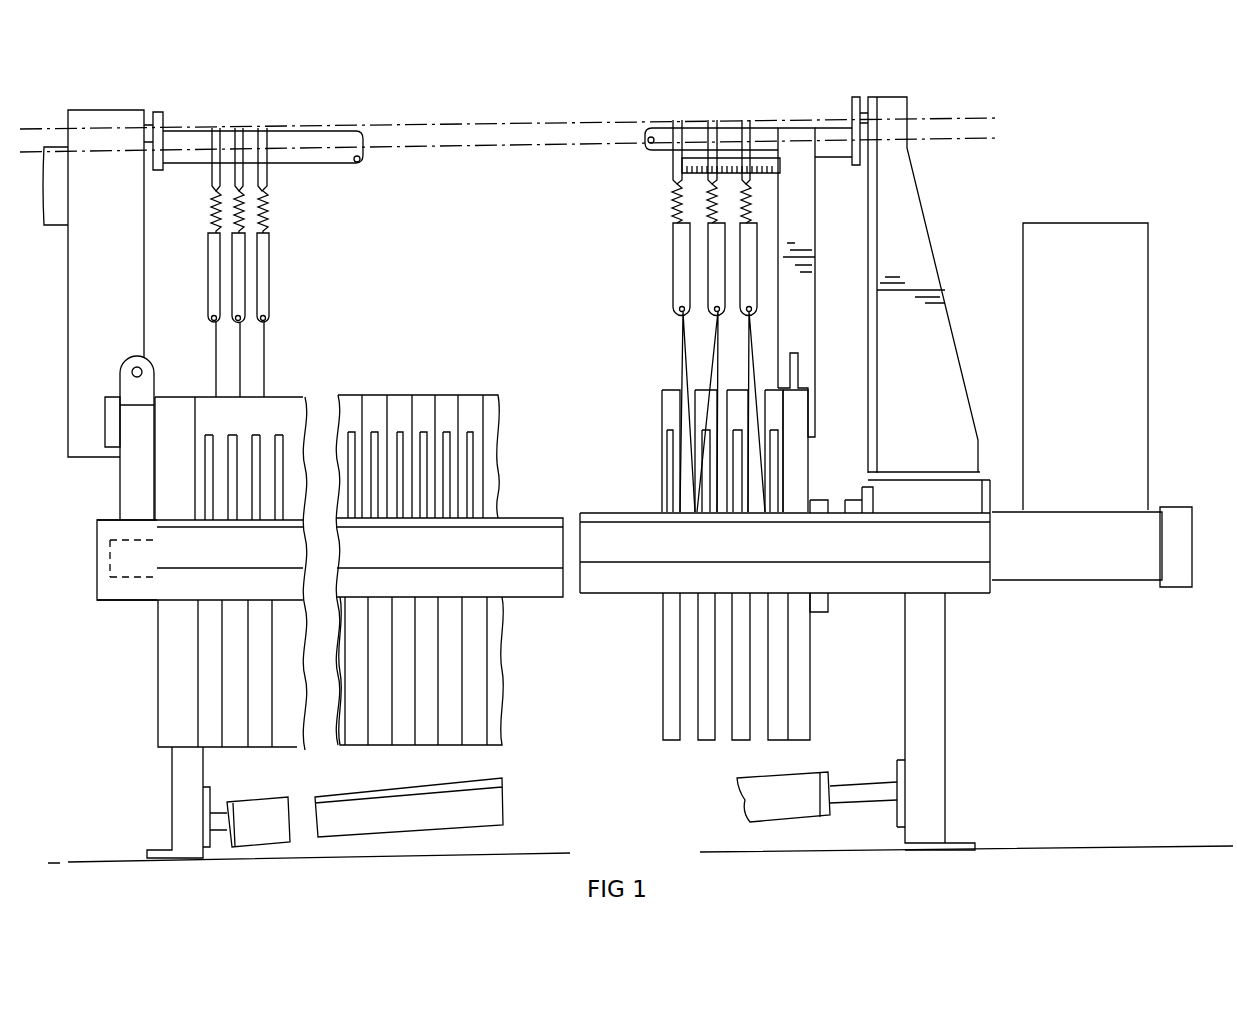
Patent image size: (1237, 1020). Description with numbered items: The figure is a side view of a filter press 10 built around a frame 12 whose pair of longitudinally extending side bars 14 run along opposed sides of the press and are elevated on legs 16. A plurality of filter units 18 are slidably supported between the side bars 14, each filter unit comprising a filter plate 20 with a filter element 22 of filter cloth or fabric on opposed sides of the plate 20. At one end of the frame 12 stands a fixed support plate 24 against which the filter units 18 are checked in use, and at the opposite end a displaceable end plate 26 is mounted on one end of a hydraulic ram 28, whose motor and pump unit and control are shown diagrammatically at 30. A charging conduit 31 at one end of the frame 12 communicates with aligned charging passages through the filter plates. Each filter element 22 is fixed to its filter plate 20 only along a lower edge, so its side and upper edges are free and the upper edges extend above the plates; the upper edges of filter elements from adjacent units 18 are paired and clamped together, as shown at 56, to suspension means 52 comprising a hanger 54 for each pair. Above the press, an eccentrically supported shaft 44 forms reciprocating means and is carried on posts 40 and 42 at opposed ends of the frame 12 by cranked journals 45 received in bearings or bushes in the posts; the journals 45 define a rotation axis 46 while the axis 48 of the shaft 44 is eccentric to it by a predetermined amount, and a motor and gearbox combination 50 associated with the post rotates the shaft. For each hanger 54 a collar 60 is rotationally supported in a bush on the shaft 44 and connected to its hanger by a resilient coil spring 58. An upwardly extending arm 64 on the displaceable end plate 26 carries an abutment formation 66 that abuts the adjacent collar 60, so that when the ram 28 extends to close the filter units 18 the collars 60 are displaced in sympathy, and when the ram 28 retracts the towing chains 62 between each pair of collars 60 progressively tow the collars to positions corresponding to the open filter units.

The filter press 10 is at (1053, 132).
The frame 12 is at (988, 603).
The side bars 14 is at (807, 555).
The legs 16 is at (180, 785).
The filter units 18 is at (450, 390).
The filter plate 20 is at (397, 407).
The filter element 22 is at (220, 371).
The fixed support plate 24 is at (175, 478).
The displaceable end plate 26 is at (795, 470).
The hydraulic ram 28 is at (1090, 578).
The motor and pump unit and control 30 is at (1100, 371).
The charging conduit 31 is at (143, 592).
The post 40 is at (86, 314).
The post 42 is at (930, 341).
The eccentric shaft 44 is at (337, 132).
The cranked journals 45 is at (146, 122).
The rotation axis 46 is at (788, 118).
The axis of the shaft 48 is at (930, 140).
The rotation means 50 is at (56, 226).
The suspension means 52 is at (306, 261).
The hanger 54 is at (268, 282).
The clamp 56 is at (672, 320).
The coil spring 58 is at (270, 223).
The collar 60 is at (266, 127).
The towing chain 62 is at (215, 196).
The arm 64 is at (802, 273).
The abutment formation 66 is at (768, 128).